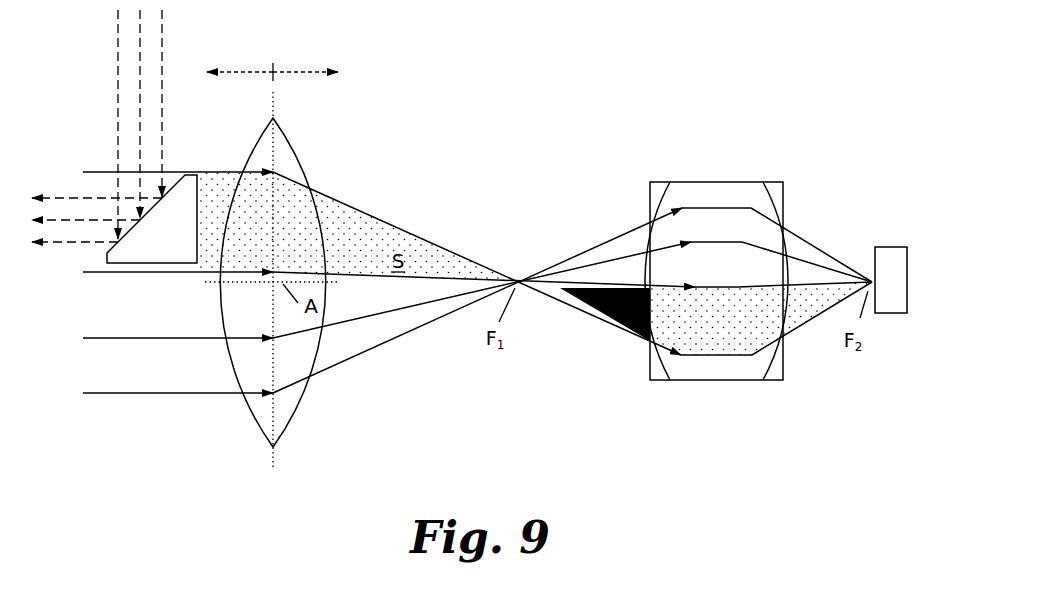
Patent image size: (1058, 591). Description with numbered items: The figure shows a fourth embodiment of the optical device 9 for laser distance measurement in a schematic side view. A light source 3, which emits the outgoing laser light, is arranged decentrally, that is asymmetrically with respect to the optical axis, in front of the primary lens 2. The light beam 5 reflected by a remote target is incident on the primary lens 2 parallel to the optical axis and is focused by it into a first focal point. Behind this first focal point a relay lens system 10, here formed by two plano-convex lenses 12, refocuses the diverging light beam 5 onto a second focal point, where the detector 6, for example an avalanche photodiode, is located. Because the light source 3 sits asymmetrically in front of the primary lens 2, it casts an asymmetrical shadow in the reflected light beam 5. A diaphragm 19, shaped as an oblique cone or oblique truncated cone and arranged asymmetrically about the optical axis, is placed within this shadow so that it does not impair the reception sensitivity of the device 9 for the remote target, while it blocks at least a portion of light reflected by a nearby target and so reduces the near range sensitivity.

The primary lens 2 is at (290, 154).
The light source 3 is at (159, 248).
The light beam reflected by the remote target 5 is at (193, 394).
The detector 6 is at (893, 249).
The optical device 9 is at (818, 42).
The relay lens system 10 is at (740, 117).
The plano-convex lenses 12 is at (662, 187).
The diaphragm 19 is at (583, 311).